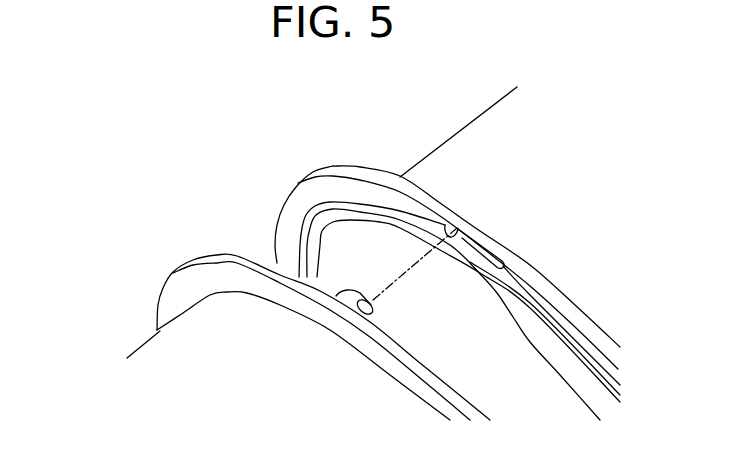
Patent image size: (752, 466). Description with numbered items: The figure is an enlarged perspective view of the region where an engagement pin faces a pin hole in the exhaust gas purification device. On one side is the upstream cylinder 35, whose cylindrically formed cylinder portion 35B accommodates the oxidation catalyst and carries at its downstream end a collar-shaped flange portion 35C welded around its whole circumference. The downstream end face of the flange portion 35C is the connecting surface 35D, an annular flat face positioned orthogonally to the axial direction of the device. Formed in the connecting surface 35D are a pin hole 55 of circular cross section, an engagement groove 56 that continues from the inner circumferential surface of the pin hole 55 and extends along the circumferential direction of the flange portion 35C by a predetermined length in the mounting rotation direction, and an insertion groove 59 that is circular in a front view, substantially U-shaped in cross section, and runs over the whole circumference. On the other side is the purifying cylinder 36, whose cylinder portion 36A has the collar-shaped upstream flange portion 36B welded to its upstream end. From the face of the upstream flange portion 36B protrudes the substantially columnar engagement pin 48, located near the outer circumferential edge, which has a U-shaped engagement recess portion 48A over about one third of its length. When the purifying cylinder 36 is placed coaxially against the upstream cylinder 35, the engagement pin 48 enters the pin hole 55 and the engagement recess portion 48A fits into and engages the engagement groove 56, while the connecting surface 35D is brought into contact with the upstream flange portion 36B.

The upstream cylinder 35 is at (473, 108).
The cylinder portion 35B is at (447, 165).
The flange portion 35C is at (347, 170).
The connecting surface 35D is at (290, 218).
The insertion groove 59 is at (318, 208).
The pin hole 55 is at (450, 221).
The engagement groove 56 is at (478, 243).
The purifying cylinder 36 is at (97, 337).
The cylinder portion 36A is at (143, 337).
The upstream flange portion 36B is at (247, 257).
The engagement pin 48 is at (374, 307).
The engagement recess portion 48A is at (340, 294).